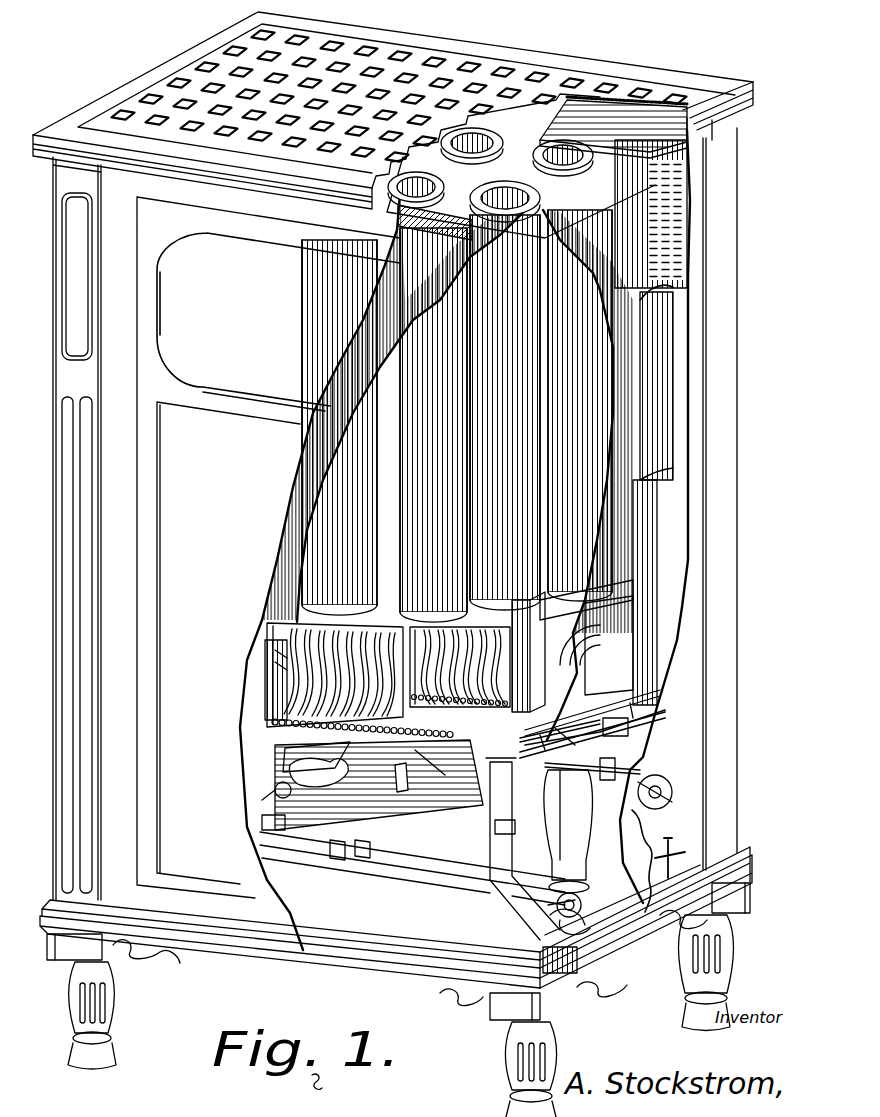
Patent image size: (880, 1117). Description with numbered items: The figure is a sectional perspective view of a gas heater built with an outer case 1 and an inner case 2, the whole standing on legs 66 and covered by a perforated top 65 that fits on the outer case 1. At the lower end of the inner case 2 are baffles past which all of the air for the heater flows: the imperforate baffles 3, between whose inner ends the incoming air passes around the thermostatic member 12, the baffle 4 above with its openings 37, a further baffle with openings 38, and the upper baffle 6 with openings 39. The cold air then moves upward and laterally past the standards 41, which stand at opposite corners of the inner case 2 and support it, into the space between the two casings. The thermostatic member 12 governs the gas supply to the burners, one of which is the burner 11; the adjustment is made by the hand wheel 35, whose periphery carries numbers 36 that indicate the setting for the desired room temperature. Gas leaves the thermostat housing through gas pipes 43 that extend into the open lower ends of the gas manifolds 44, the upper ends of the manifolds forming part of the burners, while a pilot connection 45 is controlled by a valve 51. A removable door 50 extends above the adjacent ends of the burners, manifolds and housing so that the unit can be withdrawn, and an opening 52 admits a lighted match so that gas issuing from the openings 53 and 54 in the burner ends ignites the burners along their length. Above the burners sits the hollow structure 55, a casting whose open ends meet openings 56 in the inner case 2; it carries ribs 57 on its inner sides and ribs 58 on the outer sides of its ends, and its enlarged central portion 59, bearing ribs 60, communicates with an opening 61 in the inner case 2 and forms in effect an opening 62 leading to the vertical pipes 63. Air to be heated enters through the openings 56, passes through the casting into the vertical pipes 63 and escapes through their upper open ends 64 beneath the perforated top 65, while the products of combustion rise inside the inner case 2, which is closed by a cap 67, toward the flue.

The outer case 1 is at (722, 149).
The inner case 2 is at (285, 531).
The baffles 3 is at (480, 902).
The baffle 4 is at (377, 820).
The upper baffle 6 is at (323, 750).
The burner 11 is at (543, 770).
The thermostatic member 12 is at (433, 850).
The hand wheel 35 is at (647, 861).
The numbers 36 is at (647, 770).
The openings 37 is at (413, 747).
The openings 38 is at (265, 822).
The openings 39 is at (283, 783).
The standards 41 is at (498, 827).
The gas pipes 43 is at (567, 920).
The gas manifolds 44 is at (530, 860).
The pilot connection 45 is at (592, 720).
The removable door 50 is at (688, 799).
The valve 51 is at (680, 862).
The opening 52 is at (673, 723).
The openings 53 is at (557, 743).
The openings 54 is at (665, 690).
The hollow structure 55 is at (536, 652).
The openings 56 is at (747, 610).
The ribs 57 is at (567, 677).
The ribs 58 is at (552, 598).
The enlargement 59 is at (275, 725).
The ribs 60 is at (325, 682).
The opening 61 is at (330, 652).
The opening 62 is at (305, 635).
The vertical pipes 63 is at (285, 487).
The upper open ends 64 is at (521, 184).
The perforated top 65 is at (652, 84).
The legs 66 is at (115, 1000).
The cap 67 is at (598, 148).